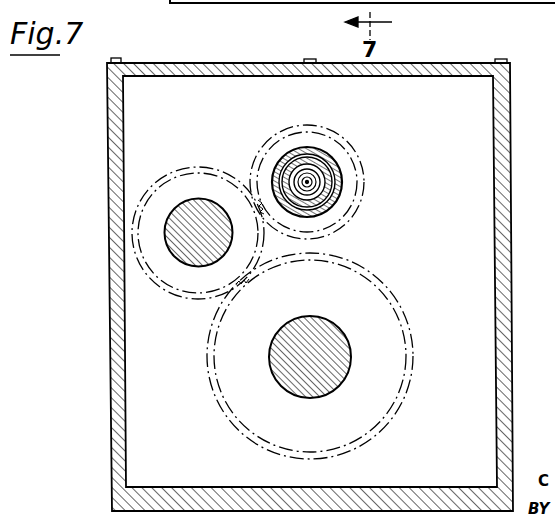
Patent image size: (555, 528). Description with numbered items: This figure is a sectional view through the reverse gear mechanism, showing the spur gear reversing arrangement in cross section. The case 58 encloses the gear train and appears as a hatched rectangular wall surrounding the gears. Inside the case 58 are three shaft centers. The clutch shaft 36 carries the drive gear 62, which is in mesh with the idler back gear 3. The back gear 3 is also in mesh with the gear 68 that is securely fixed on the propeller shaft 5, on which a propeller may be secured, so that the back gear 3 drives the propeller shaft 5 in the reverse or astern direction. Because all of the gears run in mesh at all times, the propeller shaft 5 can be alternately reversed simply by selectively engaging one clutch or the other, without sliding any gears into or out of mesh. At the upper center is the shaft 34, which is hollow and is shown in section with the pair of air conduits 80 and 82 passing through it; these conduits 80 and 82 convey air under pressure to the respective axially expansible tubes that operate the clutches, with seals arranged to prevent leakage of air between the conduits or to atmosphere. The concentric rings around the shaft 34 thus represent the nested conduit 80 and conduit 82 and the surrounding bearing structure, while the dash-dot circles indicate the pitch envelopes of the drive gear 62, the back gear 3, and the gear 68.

The idler back gear 3 is at (198, 174).
The propeller shaft 5 is at (341, 336).
The shaft 34 is at (327, 165).
The clutch shaft 36 is at (326, 173).
The case 58 is at (511, 83).
The drive gear 62 is at (356, 163).
The gear 68 is at (352, 278).
The air conduit 80 is at (324, 181).
The air conduit 82 is at (322, 188).